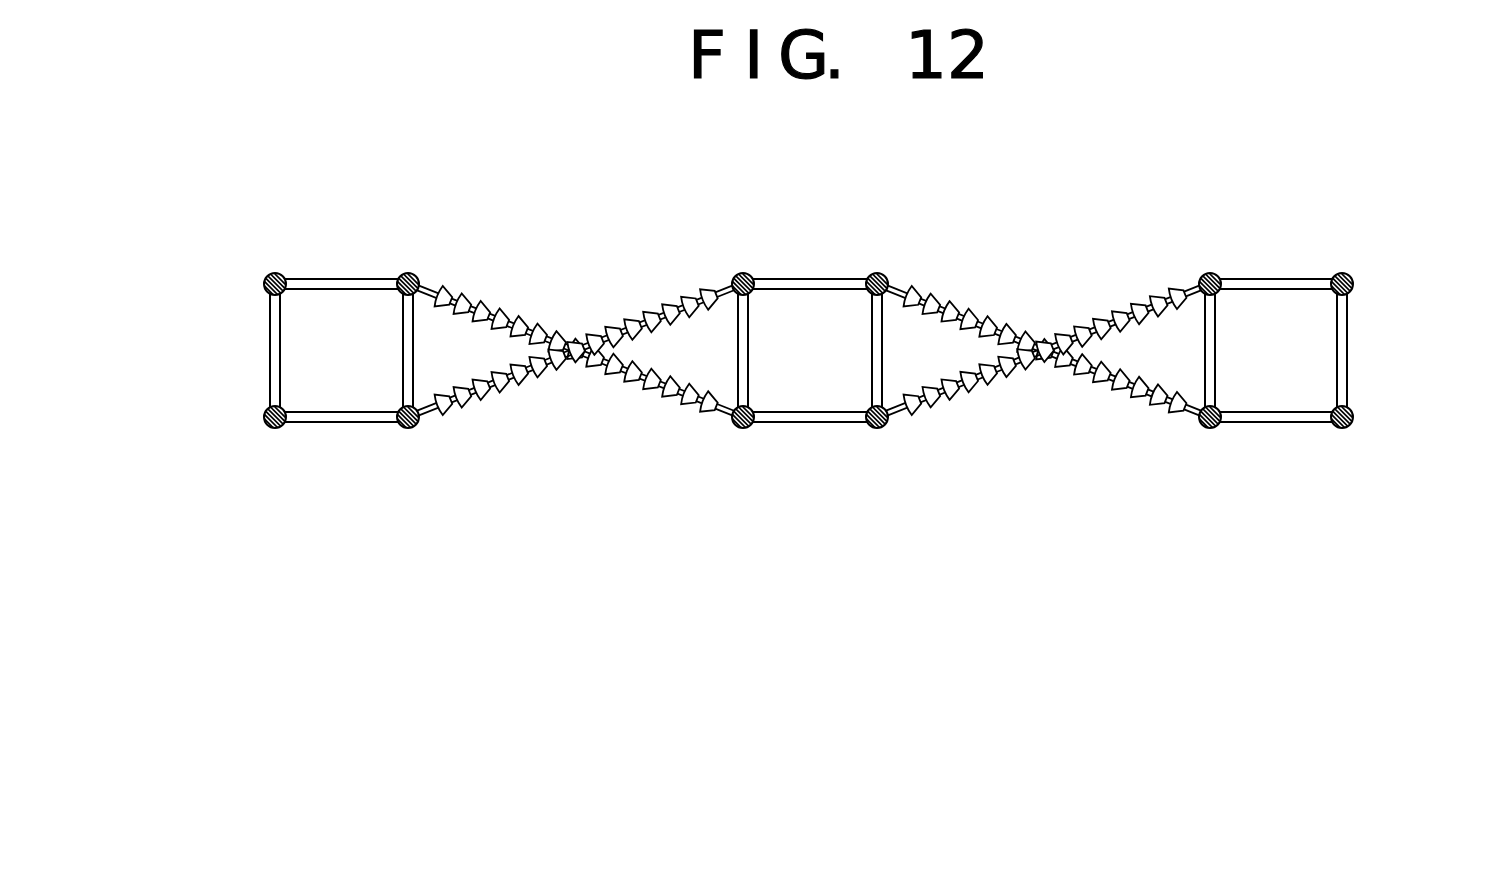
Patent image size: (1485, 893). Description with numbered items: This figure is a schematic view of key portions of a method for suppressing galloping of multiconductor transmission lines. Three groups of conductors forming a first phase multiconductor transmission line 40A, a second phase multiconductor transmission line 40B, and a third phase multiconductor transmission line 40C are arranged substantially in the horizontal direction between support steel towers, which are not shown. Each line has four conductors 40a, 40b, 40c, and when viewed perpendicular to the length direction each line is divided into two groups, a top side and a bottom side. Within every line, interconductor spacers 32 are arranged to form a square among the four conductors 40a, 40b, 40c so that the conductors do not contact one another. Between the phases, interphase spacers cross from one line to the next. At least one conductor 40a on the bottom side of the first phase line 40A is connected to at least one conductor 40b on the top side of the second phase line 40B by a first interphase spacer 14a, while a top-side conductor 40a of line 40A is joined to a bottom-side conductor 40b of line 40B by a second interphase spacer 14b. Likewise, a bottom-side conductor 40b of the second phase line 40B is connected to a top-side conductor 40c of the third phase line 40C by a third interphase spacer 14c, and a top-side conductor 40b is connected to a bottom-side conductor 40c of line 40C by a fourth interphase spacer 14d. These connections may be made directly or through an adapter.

The interconductor spacer 32 is at (265, 348).
The conductor of the first phase transmission line 40a is at (276, 274).
The conductor of the second phase transmission line 40b is at (744, 274).
The conductor of the third phase transmission line 40c is at (1209, 274).
The first interphase spacer 14a is at (638, 318).
The second interphase spacer 14b is at (622, 378).
The third interphase spacer 14c is at (988, 380).
The fourth interphase spacer 14d is at (1118, 395).
The first phase multiconductor transmission line 40A is at (343, 356).
The second phase multiconductor transmission line 40B is at (806, 356).
The third phase multiconductor transmission line 40C is at (1276, 356).